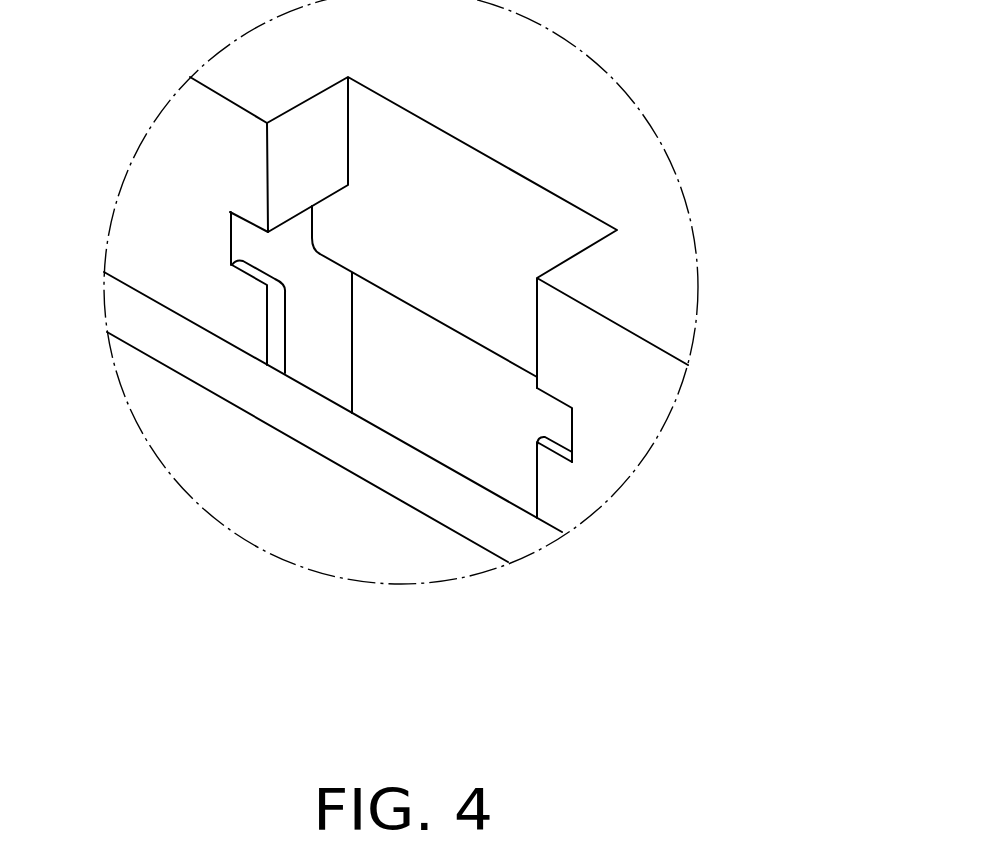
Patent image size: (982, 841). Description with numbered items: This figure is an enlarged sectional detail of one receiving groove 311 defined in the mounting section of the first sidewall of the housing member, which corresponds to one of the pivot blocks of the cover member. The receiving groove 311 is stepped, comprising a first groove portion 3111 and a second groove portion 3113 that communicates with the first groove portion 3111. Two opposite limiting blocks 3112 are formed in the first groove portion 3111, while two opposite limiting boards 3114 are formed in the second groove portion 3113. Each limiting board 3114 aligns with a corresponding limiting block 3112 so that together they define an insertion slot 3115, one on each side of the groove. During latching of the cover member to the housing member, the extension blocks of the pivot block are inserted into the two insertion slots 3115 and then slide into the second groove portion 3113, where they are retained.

The receiving groove 311 is at (447, 319).
The first groove portion 3111 is at (455, 182).
The limiting block 3112 is at (257, 197).
The second groove portion 3113 is at (463, 385).
The limiting board 3114 is at (250, 290).
The insertion slot 3115 is at (679, 457).